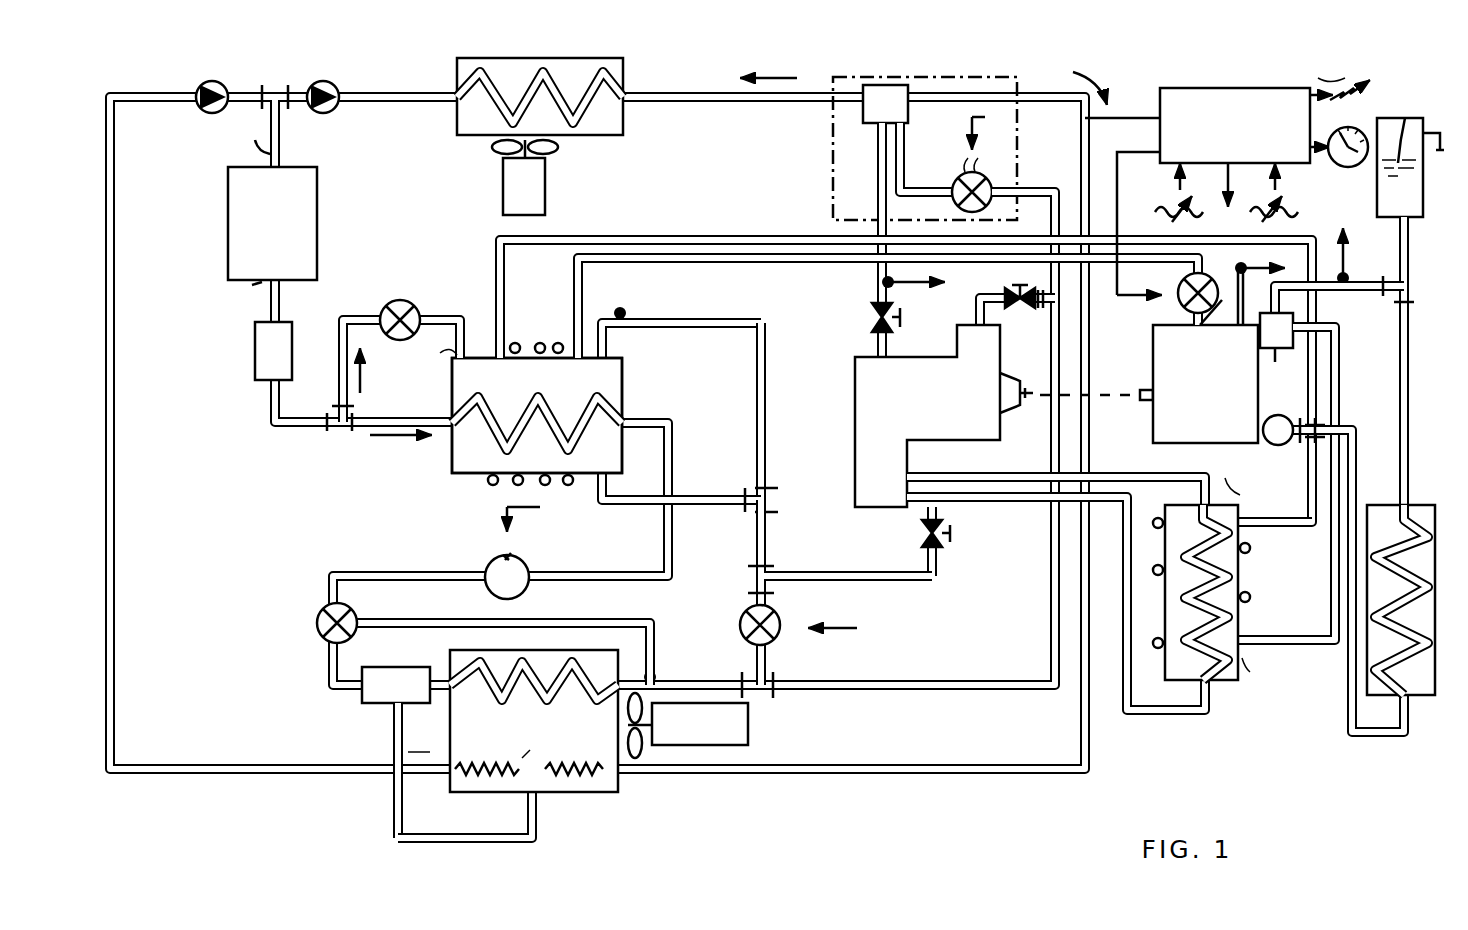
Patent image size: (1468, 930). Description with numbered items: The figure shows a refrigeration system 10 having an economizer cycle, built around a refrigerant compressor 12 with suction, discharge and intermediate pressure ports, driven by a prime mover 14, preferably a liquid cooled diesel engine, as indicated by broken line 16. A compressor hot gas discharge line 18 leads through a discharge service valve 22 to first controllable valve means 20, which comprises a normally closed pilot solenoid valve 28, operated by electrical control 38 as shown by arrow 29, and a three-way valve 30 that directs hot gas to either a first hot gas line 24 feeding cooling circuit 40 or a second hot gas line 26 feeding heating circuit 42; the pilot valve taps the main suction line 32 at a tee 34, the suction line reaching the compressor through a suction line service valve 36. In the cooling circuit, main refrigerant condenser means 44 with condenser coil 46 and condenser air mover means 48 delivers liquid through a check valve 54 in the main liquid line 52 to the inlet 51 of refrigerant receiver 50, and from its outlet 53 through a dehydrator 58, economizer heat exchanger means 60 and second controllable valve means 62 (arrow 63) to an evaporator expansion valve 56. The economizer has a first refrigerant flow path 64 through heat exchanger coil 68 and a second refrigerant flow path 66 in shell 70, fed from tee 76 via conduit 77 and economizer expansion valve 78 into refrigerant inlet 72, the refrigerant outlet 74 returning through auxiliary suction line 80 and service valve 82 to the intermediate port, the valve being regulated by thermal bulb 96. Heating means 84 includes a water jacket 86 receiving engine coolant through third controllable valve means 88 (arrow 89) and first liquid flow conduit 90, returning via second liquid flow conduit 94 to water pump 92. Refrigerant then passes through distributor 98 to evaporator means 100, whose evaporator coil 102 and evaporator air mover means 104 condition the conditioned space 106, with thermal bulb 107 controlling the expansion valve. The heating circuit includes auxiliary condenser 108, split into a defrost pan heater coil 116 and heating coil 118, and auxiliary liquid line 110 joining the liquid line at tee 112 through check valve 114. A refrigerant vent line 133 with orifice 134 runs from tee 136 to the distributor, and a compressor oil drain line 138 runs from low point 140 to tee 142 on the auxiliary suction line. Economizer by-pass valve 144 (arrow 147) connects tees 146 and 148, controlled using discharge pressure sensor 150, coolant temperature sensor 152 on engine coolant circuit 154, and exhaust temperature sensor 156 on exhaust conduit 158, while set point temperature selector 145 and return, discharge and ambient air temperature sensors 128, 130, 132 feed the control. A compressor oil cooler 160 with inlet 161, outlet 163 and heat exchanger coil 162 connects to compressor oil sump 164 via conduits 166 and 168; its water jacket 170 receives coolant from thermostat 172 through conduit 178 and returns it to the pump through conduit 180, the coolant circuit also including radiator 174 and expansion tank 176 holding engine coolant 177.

The refrigeration system 10 is at (797, 799).
The refrigerant compressor 12 is at (854, 405).
The prime mover 14 is at (1152, 355).
The broken line 16 is at (1115, 392).
The compressor hot gas discharge line 18 is at (870, 272).
The first controllable valve means 20 is at (833, 210).
The discharge service valve 22 is at (868, 316).
The first hot gas line 24 is at (700, 102).
The second hot gas line 26 is at (1048, 96).
The pilot solenoid valve 28 is at (952, 185).
The arrow 29 is at (978, 135).
The three-way valve 30 is at (910, 110).
The main suction line 32 is at (1048, 640).
The tee 34 is at (1050, 312).
The suction line service valve 36 is at (1005, 292).
The electrical control 38 is at (1197, 125).
The cooling circuit 40 is at (790, 78).
The heating circuit 42 is at (1105, 70).
The main refrigerant condenser means 44 is at (600, 135).
The condenser coil 46 is at (492, 100).
The condenser air mover means 48 is at (503, 183).
The refrigerant receiver 50 is at (272, 223).
The inlet 51 is at (253, 138).
The main liquid line 52 is at (393, 103).
The outlet 53 is at (241, 297).
The check valve 54 is at (323, 113).
The evaporator expansion valve 56 is at (316, 623).
The refrigerant dehydrator 58 is at (253, 350).
The economizer heat exchanger means 60 is at (452, 473).
The second controllable valve means 62 is at (488, 558).
The arrow 63 is at (520, 550).
The first refrigerant flow path 64 is at (385, 440).
The second refrigerant flow path 66 is at (362, 375).
The heat exchanger coil 68 is at (518, 415).
The shell 70 is at (623, 378).
The refrigerant inlet 72 is at (432, 353).
The refrigerant outlet 74 is at (612, 352).
The tee 76 is at (340, 430).
The conduit 77 is at (335, 340).
The economizer expansion valve 78 is at (380, 310).
The auxiliary suction line 80 is at (703, 320).
The service valve 82 is at (955, 528).
The heating means 84 is at (536, 330).
The water jacket 86 is at (493, 486).
The third controllable valve means 88 is at (1175, 302).
The arrow 89 is at (1160, 290).
The first liquid flow conduit 90 is at (745, 262).
The water pump 92 is at (1276, 446).
The second liquid flow conduit 94 is at (723, 238).
The thermal bulb 96 is at (622, 305).
The refrigerant distributor 98 is at (360, 705).
The evaporator means 100 is at (618, 792).
The evaporator coil 102 is at (490, 690).
The evaporator air mover means 104 is at (748, 725).
The conditioned space 106 is at (416, 739).
The thermal bulb 107 is at (660, 670).
The auxiliary condenser 108 is at (535, 737).
The auxiliary liquid line 110 is at (162, 768).
The tee 112 is at (268, 93).
The check valve 114 is at (210, 113).
The first section 116 is at (570, 755).
The second section 118 is at (500, 758).
The return air temperature sensor 128 is at (1172, 192).
The discharge air temperature sensor 130 is at (1297, 192).
The ambient air temperature sensor 132 is at (1327, 72).
The refrigerant vent line 133 is at (392, 810).
The vent orifice 134 is at (455, 840).
The tee 136 is at (535, 780).
The compressor oil drain line 138 is at (607, 508).
The low point 140 is at (540, 508).
The tee 142 is at (774, 500).
The economizer by-pass valve 144 is at (738, 620).
The set point temperature selector 145 is at (1345, 166).
The tee 146 is at (745, 572).
The arrow 147 is at (790, 636).
The tee 148 is at (778, 682).
The discharge pressure sensor 150 is at (892, 288).
The temperature sensor 152 is at (1350, 275).
The engine coolant circuit 154 is at (1339, 300).
The temperature sensor 156 is at (1240, 328).
The exhaust conduit 158 is at (1188, 335).
The compressor oil cooler 160 is at (1240, 680).
The inlet 161 is at (1260, 662).
The heat exchanger coil 162 is at (1245, 620).
The outlet 163 is at (1228, 471).
The compressor oil sump 164 is at (878, 492).
The conduit 166 is at (978, 480).
The conduit 168 is at (1028, 510).
The water jacket 170 is at (1250, 550).
The thermostat 172 is at (1283, 353).
The radiator 174 is at (1432, 508).
The expansion tank 176 is at (1415, 225).
The engine coolant 177 is at (1408, 118).
The conduit 178 is at (1296, 645).
The conduit 180 is at (1252, 485).